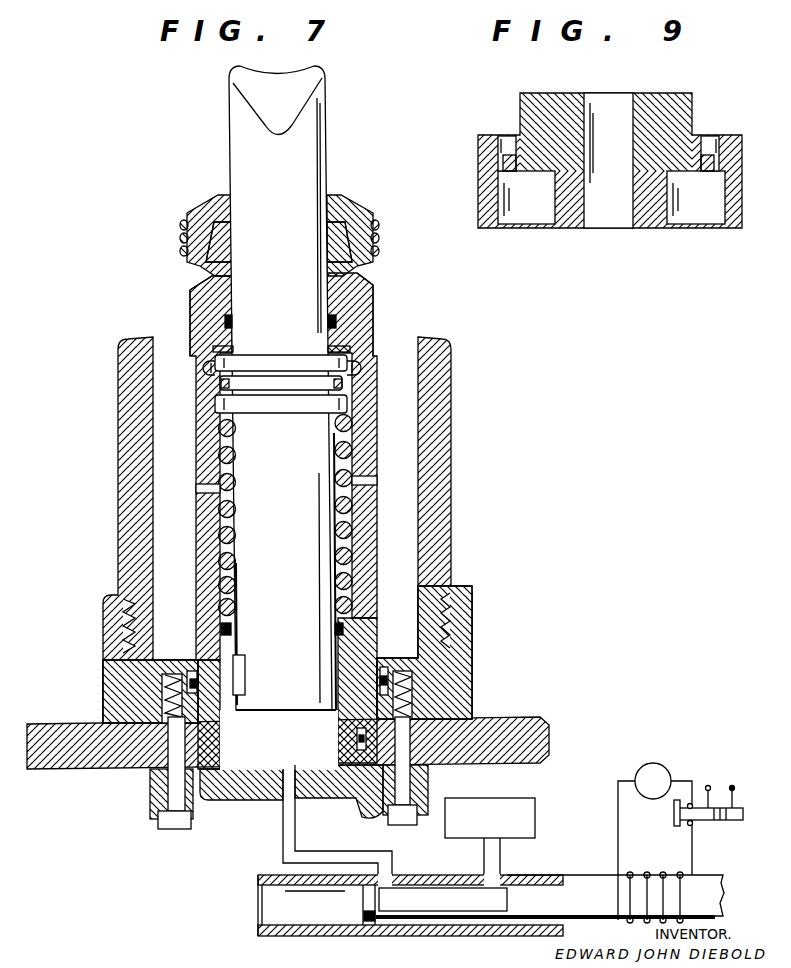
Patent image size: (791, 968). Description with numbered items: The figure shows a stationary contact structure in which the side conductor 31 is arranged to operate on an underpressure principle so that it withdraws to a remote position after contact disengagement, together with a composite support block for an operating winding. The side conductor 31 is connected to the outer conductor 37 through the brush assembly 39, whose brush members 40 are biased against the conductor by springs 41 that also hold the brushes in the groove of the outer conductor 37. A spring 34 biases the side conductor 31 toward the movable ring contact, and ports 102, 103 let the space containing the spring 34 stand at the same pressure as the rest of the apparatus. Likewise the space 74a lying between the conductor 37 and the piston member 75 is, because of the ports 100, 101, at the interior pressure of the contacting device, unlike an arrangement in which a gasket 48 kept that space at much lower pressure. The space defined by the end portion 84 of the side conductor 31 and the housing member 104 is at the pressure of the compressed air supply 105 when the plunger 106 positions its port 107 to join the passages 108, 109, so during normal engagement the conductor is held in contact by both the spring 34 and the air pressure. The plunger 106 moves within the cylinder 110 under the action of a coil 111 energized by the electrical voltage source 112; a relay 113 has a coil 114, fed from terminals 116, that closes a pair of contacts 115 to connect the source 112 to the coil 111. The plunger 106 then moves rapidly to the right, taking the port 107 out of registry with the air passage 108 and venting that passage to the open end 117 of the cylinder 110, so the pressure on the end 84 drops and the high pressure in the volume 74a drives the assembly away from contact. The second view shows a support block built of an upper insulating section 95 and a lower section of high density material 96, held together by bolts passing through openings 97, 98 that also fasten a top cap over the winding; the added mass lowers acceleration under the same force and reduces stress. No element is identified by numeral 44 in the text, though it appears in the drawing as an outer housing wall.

In FIG. 7, the side conductor 31 is at (285, 214).
In FIG. 7, the brush members 40 is at (221, 196).
In FIG. 7, the springs 41 is at (380, 239).
In FIG. 7, the brush assembly 39 is at (388, 288).
In FIG. 7, the gasket 48 is at (328, 316).
In FIG. 7, the piston member 75 is at (302, 352).
In FIG. 7, the space 74a is at (213, 346).
In FIG. 7, the port 100 is at (362, 359).
In FIG. 7, the port 101 is at (204, 366).
In FIG. 7, the port 102 is at (369, 478).
In FIG. 7, the port 103 is at (205, 486).
In FIG. 7, the housing 44 is at (445, 455).
In FIG. 7, the outer conductor 37 is at (374, 548).
In FIG. 7, the spring 34 is at (353, 578).
In FIG. 7, the end portion 84 is at (298, 675).
In FIG. 7, the housing member 104 is at (342, 785).
In FIG. 7, the air passage 108 is at (325, 858).
In FIG. 7, the compressed air supply 105 is at (536, 807).
In FIG. 7, the passage 109 is at (501, 850).
In FIG. 7, the open end 117 is at (292, 908).
In FIG. 7, the port 107 is at (452, 884).
In FIG. 7, the plunger 106 is at (566, 908).
In FIG. 7, the cylinder 110 is at (466, 930).
In FIG. 7, the coil 111 is at (637, 866).
In FIG. 7, the electrical voltage source 112 is at (655, 830).
In FIG. 7, the terminals 116 is at (741, 775).
In FIG. 7, the relay 113 is at (776, 796).
In FIG. 7, the contacts 115 is at (690, 823).
In FIG. 7, the coil 114 is at (718, 818).
In FIG. 9, the upper insulating section 95 is at (672, 115).
In FIG. 9, the lower section of high density material 96 is at (571, 226).
In FIG. 9, the opening 97 is at (497, 145).
In FIG. 9, the opening 98 is at (730, 141).